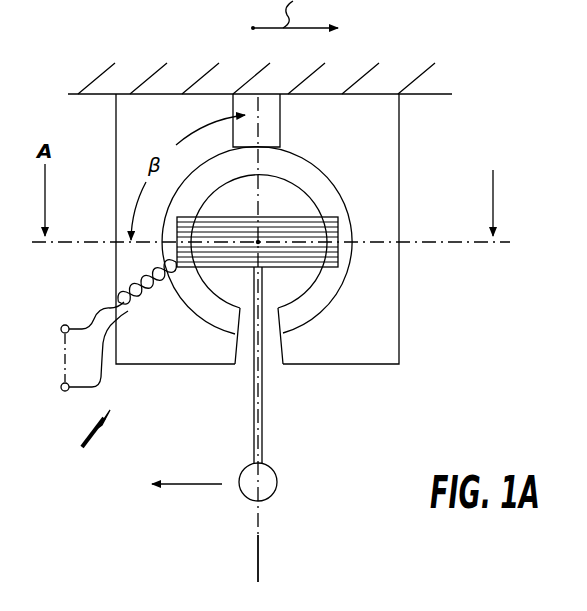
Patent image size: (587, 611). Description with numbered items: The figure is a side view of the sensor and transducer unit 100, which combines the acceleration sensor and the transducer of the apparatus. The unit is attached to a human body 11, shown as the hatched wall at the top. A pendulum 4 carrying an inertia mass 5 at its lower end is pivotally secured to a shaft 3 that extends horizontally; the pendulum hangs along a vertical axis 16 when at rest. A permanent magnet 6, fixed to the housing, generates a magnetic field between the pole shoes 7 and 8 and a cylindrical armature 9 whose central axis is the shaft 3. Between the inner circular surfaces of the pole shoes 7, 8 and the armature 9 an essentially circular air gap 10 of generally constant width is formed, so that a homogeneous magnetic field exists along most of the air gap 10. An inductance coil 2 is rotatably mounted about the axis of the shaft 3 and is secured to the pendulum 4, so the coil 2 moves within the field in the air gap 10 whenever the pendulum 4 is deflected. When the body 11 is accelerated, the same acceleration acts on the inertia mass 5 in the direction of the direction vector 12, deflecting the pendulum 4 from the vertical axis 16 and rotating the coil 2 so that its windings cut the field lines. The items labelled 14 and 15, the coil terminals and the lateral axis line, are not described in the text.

The inductance coil 2 is at (340, 222).
The shaft 3 is at (258, 242).
The pendulum 4 is at (262, 392).
The inertia mass 5 is at (268, 482).
The permanent magnet 6 is at (270, 118).
The pole shoe 7 is at (166, 353).
The pole shoe 8 is at (392, 356).
The armature 9 is at (290, 290).
The air gap 10 is at (303, 170).
The human body 11 is at (393, 76).
The direction vector 12 is at (185, 484).
The coil terminals 14 is at (62, 359).
The pivot axis line 15 is at (500, 243).
The vertical axis 16 is at (260, 548).
The sensor and transducer unit 100 is at (82, 444).